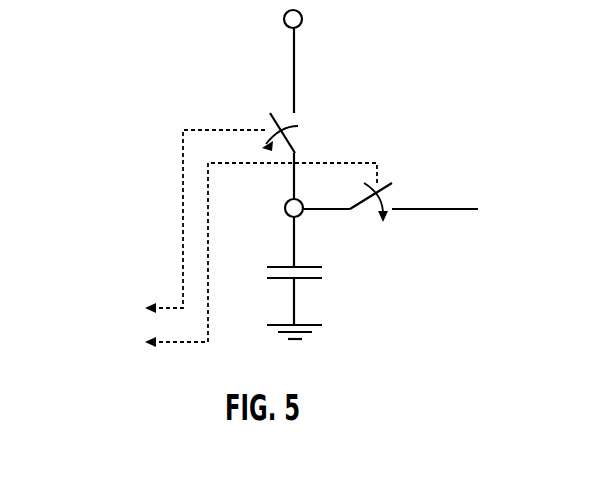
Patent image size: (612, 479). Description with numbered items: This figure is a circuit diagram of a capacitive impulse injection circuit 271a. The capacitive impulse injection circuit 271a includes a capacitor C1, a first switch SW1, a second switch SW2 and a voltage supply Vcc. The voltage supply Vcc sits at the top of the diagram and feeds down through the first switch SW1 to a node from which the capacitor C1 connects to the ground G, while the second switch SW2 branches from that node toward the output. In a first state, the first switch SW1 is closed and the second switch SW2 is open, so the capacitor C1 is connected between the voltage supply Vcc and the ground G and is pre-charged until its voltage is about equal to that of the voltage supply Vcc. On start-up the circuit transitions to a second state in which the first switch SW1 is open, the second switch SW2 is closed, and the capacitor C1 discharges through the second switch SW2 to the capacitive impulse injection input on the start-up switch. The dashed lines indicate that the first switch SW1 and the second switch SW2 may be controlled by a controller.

The capacitive impulse injection circuit 271a is at (270, 178).
The voltage supply Vcc is at (315, 59).
The first switch SW1 is at (308, 155).
The second switch SW2 is at (390, 217).
The capacitor C1 is at (307, 292).
The ground G is at (305, 334).